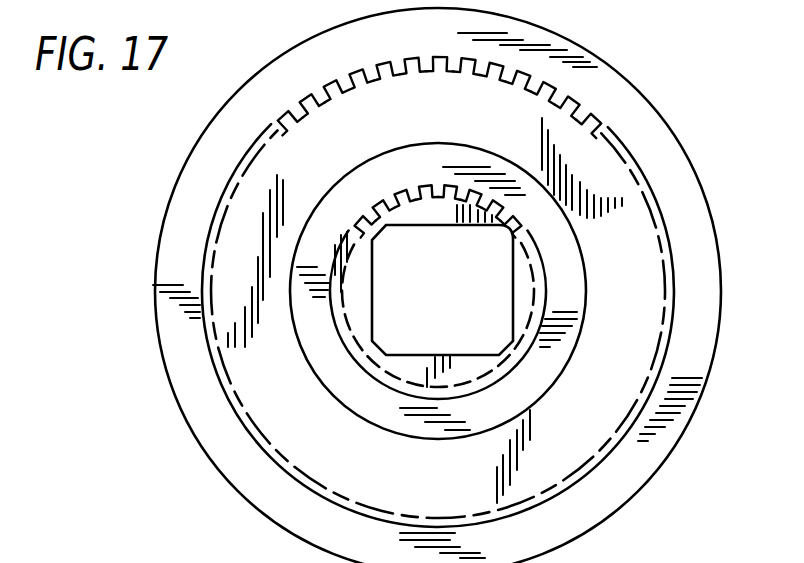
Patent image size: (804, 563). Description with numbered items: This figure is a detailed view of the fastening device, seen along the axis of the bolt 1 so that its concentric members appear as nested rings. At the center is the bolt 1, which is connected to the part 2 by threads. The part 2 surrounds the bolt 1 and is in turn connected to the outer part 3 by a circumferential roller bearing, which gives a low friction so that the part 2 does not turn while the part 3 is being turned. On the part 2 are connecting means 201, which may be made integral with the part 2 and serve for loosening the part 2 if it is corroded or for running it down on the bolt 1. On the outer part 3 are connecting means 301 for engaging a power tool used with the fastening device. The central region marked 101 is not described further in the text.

The bolt 1 is at (528, 260).
The part 2 is at (647, 310).
The part 3 is at (670, 433).
The square shaft bore 101 is at (478, 292).
The connecting means 201 is at (493, 203).
The connecting means 301 is at (557, 85).